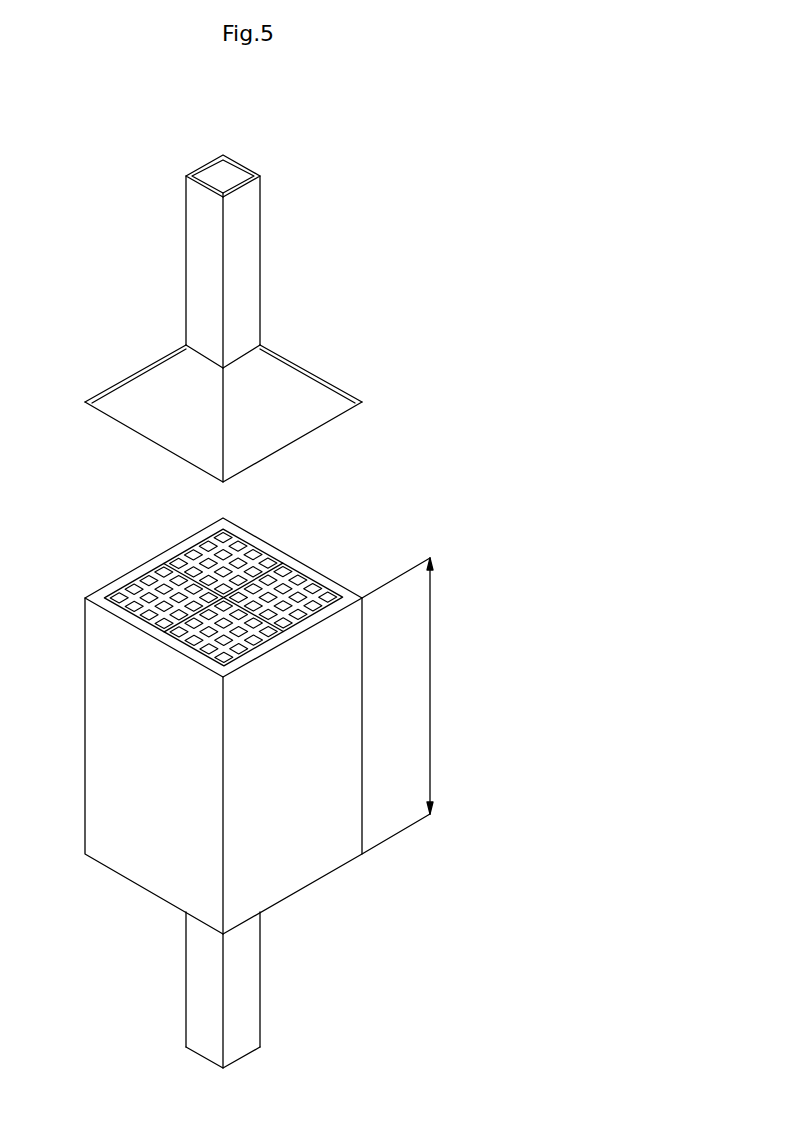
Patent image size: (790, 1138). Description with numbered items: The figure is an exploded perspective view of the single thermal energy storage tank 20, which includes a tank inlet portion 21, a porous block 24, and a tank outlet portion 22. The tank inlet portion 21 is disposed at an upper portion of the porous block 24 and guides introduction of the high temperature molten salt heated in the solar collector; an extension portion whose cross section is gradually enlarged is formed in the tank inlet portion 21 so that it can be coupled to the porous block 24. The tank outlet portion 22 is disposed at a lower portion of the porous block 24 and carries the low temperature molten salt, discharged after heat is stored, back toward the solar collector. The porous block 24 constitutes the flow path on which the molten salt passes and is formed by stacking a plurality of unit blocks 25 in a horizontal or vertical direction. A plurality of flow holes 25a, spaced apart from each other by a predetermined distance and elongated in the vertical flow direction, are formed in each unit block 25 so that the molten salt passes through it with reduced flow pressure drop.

The single thermal energy storage tank 20 is at (420, 243).
The tank inlet portion 21 is at (258, 248).
The tank outlet portion 22 is at (261, 997).
The porous block 24 is at (92, 745).
The unit block 25 is at (320, 590).
The flow hole 25a is at (183, 562).